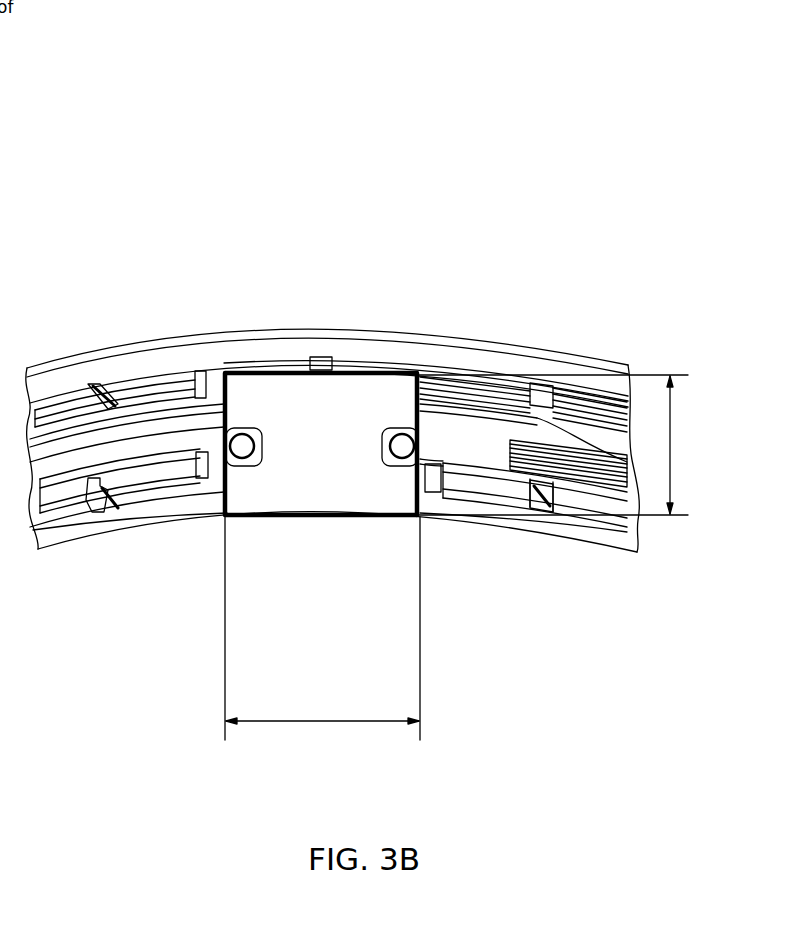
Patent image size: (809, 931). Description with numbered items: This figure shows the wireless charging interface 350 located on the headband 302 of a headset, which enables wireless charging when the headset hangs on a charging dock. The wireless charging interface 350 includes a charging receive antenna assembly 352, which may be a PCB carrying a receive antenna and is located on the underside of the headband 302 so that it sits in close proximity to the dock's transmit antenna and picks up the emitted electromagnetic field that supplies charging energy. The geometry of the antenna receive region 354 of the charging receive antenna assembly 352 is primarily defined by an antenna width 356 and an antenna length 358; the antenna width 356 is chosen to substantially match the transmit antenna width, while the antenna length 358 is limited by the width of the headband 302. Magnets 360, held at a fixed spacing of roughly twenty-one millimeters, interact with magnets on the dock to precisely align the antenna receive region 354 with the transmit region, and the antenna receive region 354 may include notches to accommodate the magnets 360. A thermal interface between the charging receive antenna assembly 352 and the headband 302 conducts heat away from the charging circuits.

The headband 302 is at (517, 338).
The wireless charging interface 350 is at (485, 347).
The charging receive antenna assembly 352 is at (408, 392).
The antenna receive region 354 is at (350, 497).
The antenna width 356 is at (358, 721).
The antenna length 358 is at (670, 463).
The magnets 360 is at (388, 447).